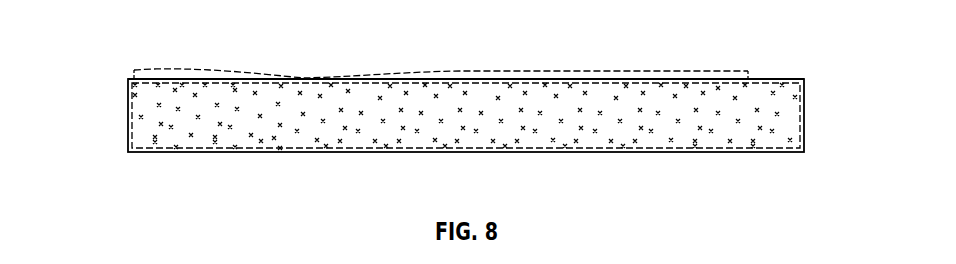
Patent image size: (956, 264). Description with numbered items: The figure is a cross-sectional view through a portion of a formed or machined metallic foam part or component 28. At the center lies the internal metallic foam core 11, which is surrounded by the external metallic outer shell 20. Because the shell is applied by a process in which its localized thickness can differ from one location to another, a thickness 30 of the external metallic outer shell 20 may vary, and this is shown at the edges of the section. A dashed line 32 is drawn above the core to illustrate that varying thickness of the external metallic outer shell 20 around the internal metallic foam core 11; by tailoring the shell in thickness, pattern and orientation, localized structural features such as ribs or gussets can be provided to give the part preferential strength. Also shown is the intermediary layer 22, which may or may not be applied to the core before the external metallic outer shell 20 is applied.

The internal metallic foam core 11 is at (335, 108).
The external metallic outer shell 20 is at (192, 80).
The intermediary layer 22 is at (748, 154).
The part or component 28 is at (678, 41).
The thickness 30 is at (133, 73).
The dashed line 32 is at (422, 71).